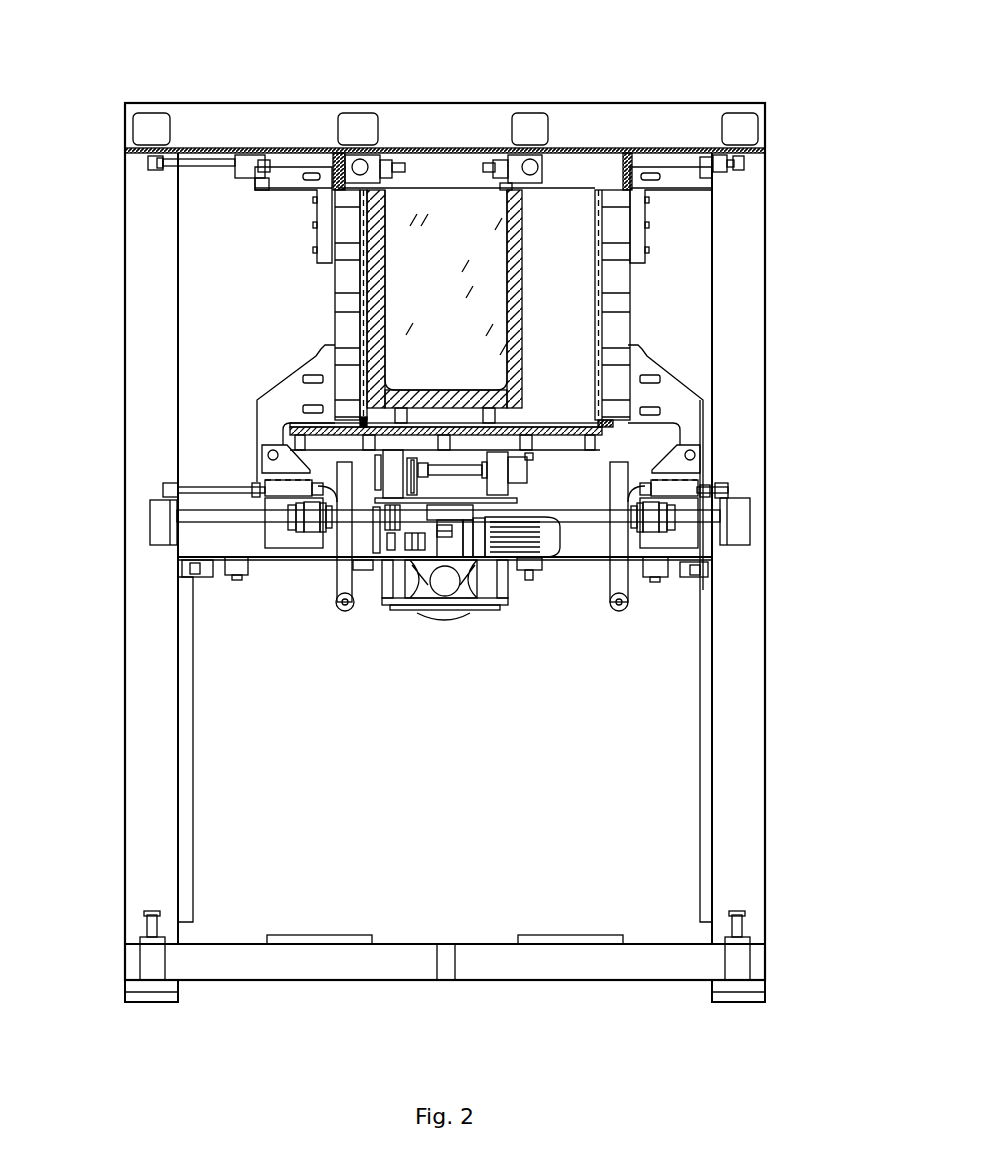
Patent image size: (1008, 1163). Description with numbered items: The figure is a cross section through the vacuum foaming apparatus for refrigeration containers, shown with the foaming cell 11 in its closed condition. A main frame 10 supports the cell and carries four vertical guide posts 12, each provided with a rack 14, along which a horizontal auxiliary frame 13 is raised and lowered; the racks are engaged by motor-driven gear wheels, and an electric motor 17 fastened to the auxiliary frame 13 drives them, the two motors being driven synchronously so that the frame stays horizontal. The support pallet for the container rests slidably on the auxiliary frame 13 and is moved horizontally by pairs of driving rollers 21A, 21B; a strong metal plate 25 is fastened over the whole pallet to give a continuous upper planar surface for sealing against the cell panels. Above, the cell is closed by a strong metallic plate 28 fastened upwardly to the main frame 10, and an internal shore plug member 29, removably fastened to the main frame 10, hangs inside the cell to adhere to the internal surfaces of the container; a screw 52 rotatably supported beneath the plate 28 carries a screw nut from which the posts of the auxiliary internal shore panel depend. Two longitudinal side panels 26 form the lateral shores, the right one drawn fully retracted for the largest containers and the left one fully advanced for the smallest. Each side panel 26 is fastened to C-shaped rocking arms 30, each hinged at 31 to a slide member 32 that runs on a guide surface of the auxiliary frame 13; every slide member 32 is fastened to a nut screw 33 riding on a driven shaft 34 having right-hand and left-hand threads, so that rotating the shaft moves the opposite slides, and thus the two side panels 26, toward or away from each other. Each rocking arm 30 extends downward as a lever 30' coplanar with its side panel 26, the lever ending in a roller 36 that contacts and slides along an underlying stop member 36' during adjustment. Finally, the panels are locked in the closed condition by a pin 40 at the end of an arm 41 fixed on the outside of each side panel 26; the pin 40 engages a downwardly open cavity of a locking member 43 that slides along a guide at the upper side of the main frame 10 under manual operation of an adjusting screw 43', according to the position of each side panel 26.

The main frame 10 is at (638, 120).
The foaming cell 11 is at (312, 301).
The vertical guide posts 12 is at (148, 650).
The auxiliary frame 13 is at (253, 560).
The rack 14 is at (188, 785).
The electric motor 17 is at (448, 585).
The driving roller 21A is at (295, 478).
The driving roller 21B is at (648, 482).
The metal plate 25 is at (588, 428).
The side panels 26 is at (345, 325).
The metallic plate 28 is at (450, 148).
The shore plug member 29 is at (458, 336).
The rocking arms 30 is at (445, 459).
The lever 30' is at (482, 570).
The hinge connection 31 is at (305, 462).
The slide member 32 is at (280, 540).
The nut screw 33 is at (313, 522).
The driven shaft 34 is at (275, 538).
The roller 36 is at (490, 658).
The stop member 36' is at (445, 896).
The pin 40 is at (255, 183).
The arm 41 is at (285, 190).
The locking member 43 is at (489, 94).
The adjusting screw 43' is at (191, 90).
The screw 52 is at (357, 158).